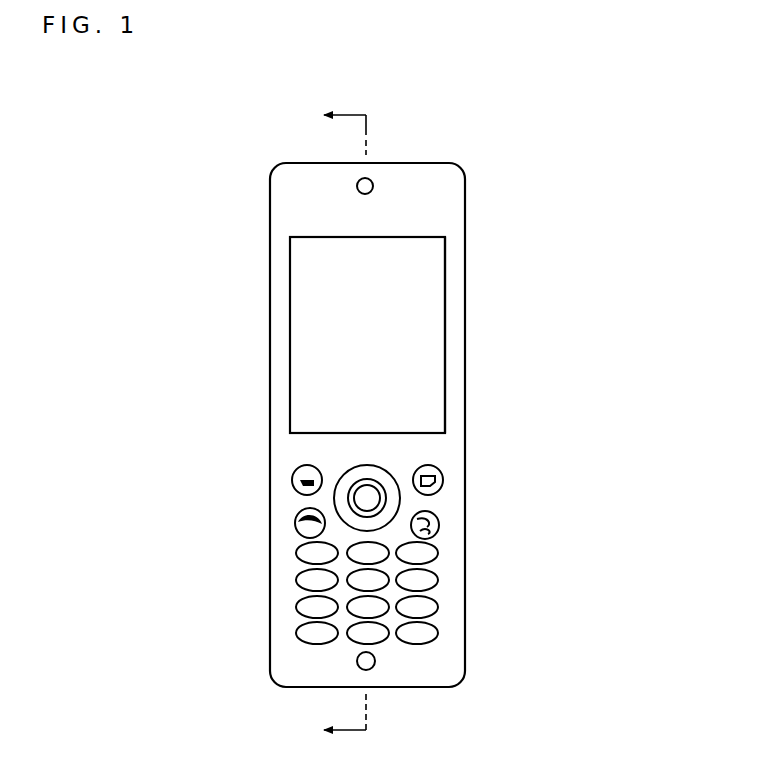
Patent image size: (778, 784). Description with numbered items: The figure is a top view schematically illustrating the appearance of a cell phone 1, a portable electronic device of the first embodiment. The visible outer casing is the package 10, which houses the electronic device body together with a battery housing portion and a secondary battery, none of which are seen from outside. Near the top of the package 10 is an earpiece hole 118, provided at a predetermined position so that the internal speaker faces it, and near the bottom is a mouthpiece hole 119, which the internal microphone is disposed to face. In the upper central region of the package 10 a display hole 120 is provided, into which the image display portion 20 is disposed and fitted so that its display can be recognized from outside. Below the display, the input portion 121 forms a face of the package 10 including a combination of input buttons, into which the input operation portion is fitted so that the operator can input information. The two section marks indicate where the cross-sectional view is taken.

The cell phone 1 is at (158, 98).
The package 10 is at (466, 455).
The image display portion 20 is at (315, 347).
The earpiece hole 118 is at (371, 180).
The mouthpiece hole 119 is at (372, 668).
The display hole 120 is at (441, 343).
The input portion 121 is at (286, 573).